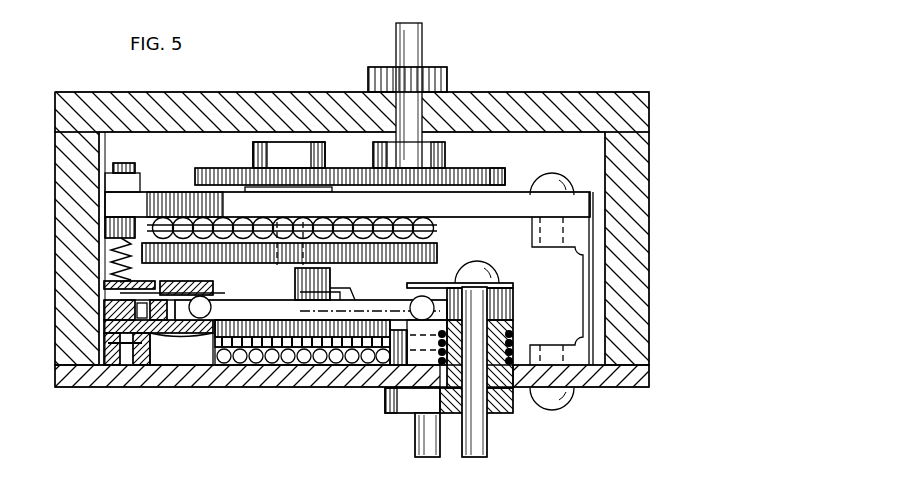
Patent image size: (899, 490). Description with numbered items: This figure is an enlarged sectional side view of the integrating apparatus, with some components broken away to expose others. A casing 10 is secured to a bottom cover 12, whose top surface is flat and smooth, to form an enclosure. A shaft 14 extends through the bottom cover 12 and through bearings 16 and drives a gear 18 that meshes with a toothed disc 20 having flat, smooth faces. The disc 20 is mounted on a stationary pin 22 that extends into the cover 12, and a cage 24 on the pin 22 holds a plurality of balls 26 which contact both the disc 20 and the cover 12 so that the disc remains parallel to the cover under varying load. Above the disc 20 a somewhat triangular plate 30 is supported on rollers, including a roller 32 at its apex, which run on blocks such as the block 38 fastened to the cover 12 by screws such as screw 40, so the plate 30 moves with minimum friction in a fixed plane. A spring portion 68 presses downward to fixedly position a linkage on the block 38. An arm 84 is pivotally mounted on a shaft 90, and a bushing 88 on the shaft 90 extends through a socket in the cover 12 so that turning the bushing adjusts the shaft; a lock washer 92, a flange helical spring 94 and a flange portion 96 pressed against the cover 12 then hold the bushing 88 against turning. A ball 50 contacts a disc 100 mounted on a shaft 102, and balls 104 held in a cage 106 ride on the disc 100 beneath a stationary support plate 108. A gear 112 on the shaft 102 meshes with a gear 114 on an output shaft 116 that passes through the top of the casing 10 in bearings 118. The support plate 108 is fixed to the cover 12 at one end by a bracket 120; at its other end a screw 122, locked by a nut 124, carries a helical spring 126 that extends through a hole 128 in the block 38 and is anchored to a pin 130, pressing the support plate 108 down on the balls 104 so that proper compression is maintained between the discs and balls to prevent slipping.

The casing 10 is at (99, 252).
The bottom cover 12 is at (58, 388).
The shaft 14 is at (427, 458).
The bearings 16 is at (403, 405).
The gear 18 is at (390, 358).
The toothed disc 20 is at (327, 347).
The pin 22 is at (300, 354).
The cage 24 is at (240, 348).
The balls 26 is at (263, 349).
The plate 30 is at (218, 303).
The roller 32 is at (416, 297).
The block 38 is at (190, 357).
The screw 40 is at (491, 268).
The ball 50 is at (327, 272).
The spring portion 68 is at (104, 290).
The arm 84 is at (373, 310).
The bushing 88 is at (505, 310).
The shaft 90 is at (476, 458).
The lock washer 92 is at (513, 330).
The flange helical spring 94 is at (514, 345).
The flange portion 96 is at (513, 410).
The disc 100 is at (437, 252).
The shaft 102 is at (264, 152).
The balls 104 is at (432, 228).
The cage 106 is at (105, 226).
The support plate 108 is at (105, 206).
The gear 112 is at (215, 168).
The gear 114 is at (504, 172).
The output shaft 116 is at (405, 36).
The bearings 118 is at (373, 78).
The bracket 120 is at (580, 350).
The screw 122 is at (110, 168).
The nut 124 is at (105, 186).
The helical spring 126 is at (111, 272).
The hole 128 is at (121, 366).
The pin 130 is at (104, 345).